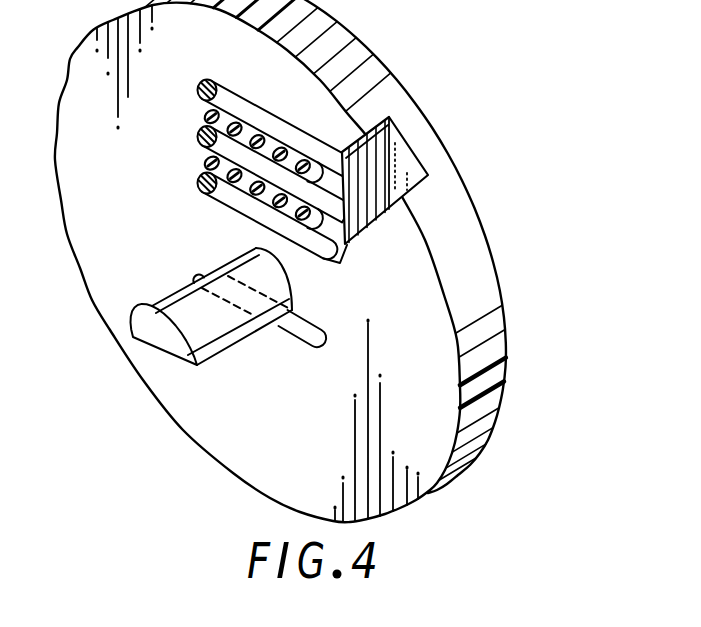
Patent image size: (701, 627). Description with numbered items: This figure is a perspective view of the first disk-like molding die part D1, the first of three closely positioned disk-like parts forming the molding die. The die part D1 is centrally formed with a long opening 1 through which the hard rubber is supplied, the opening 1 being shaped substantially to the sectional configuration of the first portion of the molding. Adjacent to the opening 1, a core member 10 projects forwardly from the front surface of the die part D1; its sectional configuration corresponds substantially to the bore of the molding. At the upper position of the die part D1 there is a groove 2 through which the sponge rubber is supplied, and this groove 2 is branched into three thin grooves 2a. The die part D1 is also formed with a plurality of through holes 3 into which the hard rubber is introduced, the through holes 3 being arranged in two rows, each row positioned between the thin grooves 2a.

The long opening 1 is at (305, 342).
The groove 2 is at (392, 160).
The thin grooves 2a is at (248, 112).
The through holes 3 is at (206, 162).
The core member 10 is at (167, 337).
The first disk-like molding die part D1 is at (360, 77).